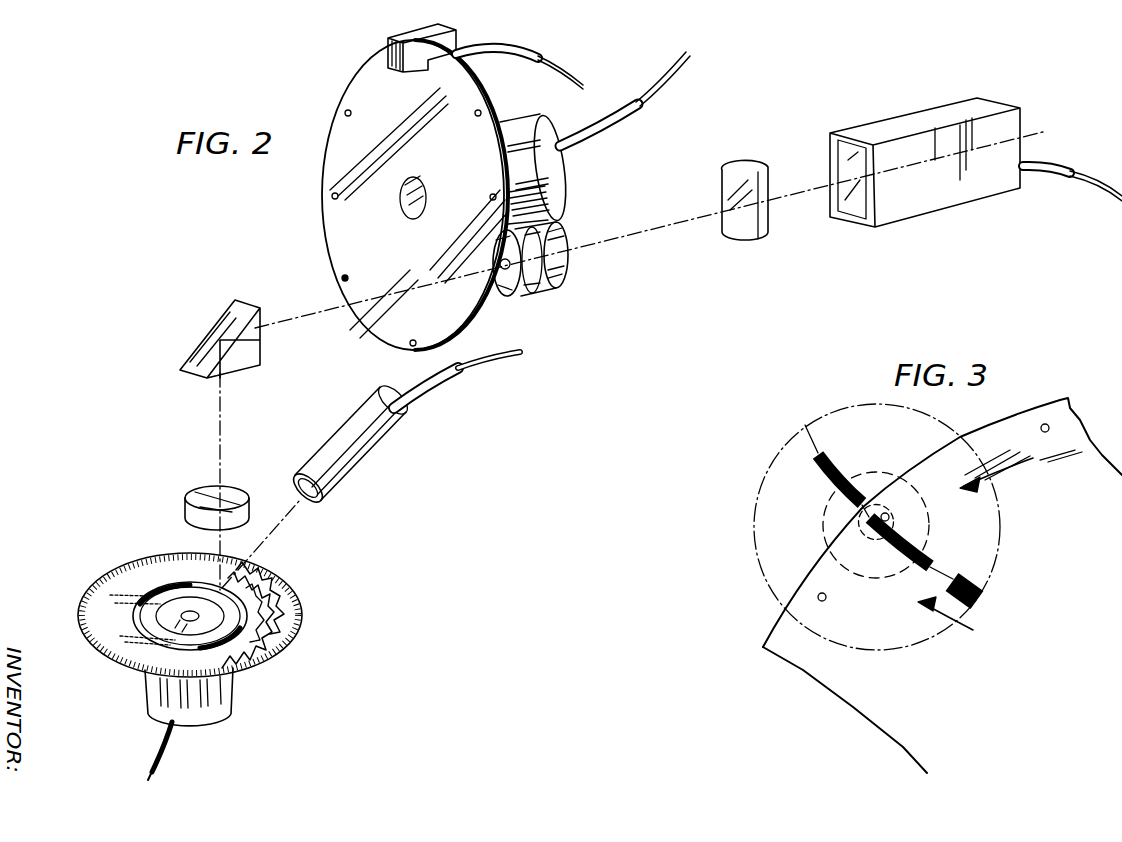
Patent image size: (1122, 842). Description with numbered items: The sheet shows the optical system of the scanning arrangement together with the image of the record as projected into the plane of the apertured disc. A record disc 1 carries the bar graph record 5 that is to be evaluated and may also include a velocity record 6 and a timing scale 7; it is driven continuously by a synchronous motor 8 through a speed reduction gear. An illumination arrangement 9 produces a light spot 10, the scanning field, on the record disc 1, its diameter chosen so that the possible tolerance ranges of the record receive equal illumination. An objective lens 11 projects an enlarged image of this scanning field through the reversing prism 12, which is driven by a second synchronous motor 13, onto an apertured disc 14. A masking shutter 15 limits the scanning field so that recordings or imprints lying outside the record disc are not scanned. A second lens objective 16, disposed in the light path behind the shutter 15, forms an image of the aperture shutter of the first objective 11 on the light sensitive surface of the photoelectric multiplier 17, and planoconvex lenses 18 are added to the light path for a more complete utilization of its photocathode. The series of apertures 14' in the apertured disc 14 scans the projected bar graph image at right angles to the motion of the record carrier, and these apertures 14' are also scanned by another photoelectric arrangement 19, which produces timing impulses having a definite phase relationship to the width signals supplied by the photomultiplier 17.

In FIG. 2, the record disc 1 is at (112, 590).
In FIG. 2, the bar graph record 5 is at (282, 621).
In FIG. 3, the bar graph record 5 is at (928, 557).
In FIG. 2, the velocity record 6 is at (284, 636).
In FIG. 2, the timing scale 7 is at (286, 650).
In FIG. 2, the synchronous motor 8 is at (168, 712).
In FIG. 2, the illumination arrangement 9 is at (353, 433).
In FIG. 2, the light spot 10 is at (242, 592).
In FIG. 2, the objective lens 11 is at (196, 528).
In FIG. 2, the reversing prism 12 is at (262, 351).
In FIG. 2, the second synchronous motor 13 is at (527, 135).
In FIG. 2, the apertured disc 14 is at (407, 195).
In FIG. 3, the apertured disc 14 is at (925, 585).
In FIG. 2, the apertures 14' is at (361, 237).
In FIG. 3, the apertures 14' is at (1076, 405).
In FIG. 2, the masking shutter 15 is at (508, 286).
In FIG. 3, the masking shutter 15 is at (832, 527).
In FIG. 2, the second lens objective 16 is at (555, 247).
In FIG. 2, the photoelectric multiplier 17 is at (942, 188).
In FIG. 2, the planoconvex lenses 18 is at (726, 200).
In FIG. 2, the photoelectric arrangement 19 is at (454, 40).